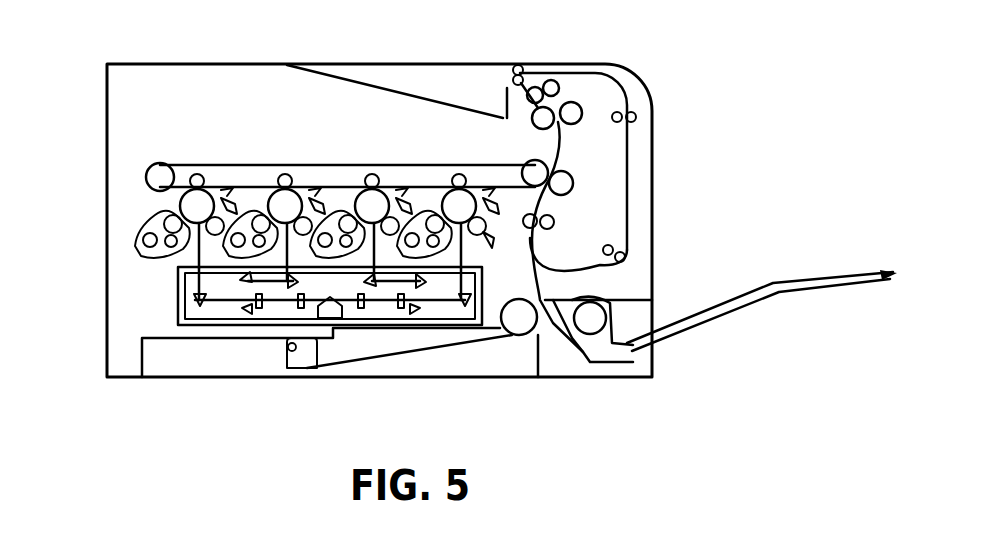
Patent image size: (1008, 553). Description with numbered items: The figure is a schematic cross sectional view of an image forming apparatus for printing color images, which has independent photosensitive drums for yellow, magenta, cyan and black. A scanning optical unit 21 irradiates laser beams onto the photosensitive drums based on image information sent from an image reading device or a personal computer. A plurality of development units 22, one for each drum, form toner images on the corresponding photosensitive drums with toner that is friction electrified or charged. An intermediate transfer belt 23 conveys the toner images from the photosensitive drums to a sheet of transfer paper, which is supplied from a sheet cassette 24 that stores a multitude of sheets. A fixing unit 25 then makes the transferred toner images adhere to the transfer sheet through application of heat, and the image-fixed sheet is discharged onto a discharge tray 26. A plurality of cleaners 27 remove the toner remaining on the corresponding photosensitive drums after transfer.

The scanning optical unit 21 is at (176, 300).
The development units 22 is at (430, 198).
The intermediate transfer belt 23 is at (210, 165).
The sheet cassette 24 is at (242, 355).
The fixing unit 25 is at (582, 100).
The discharge tray 26 is at (455, 100).
The cleaners 27 is at (492, 238).